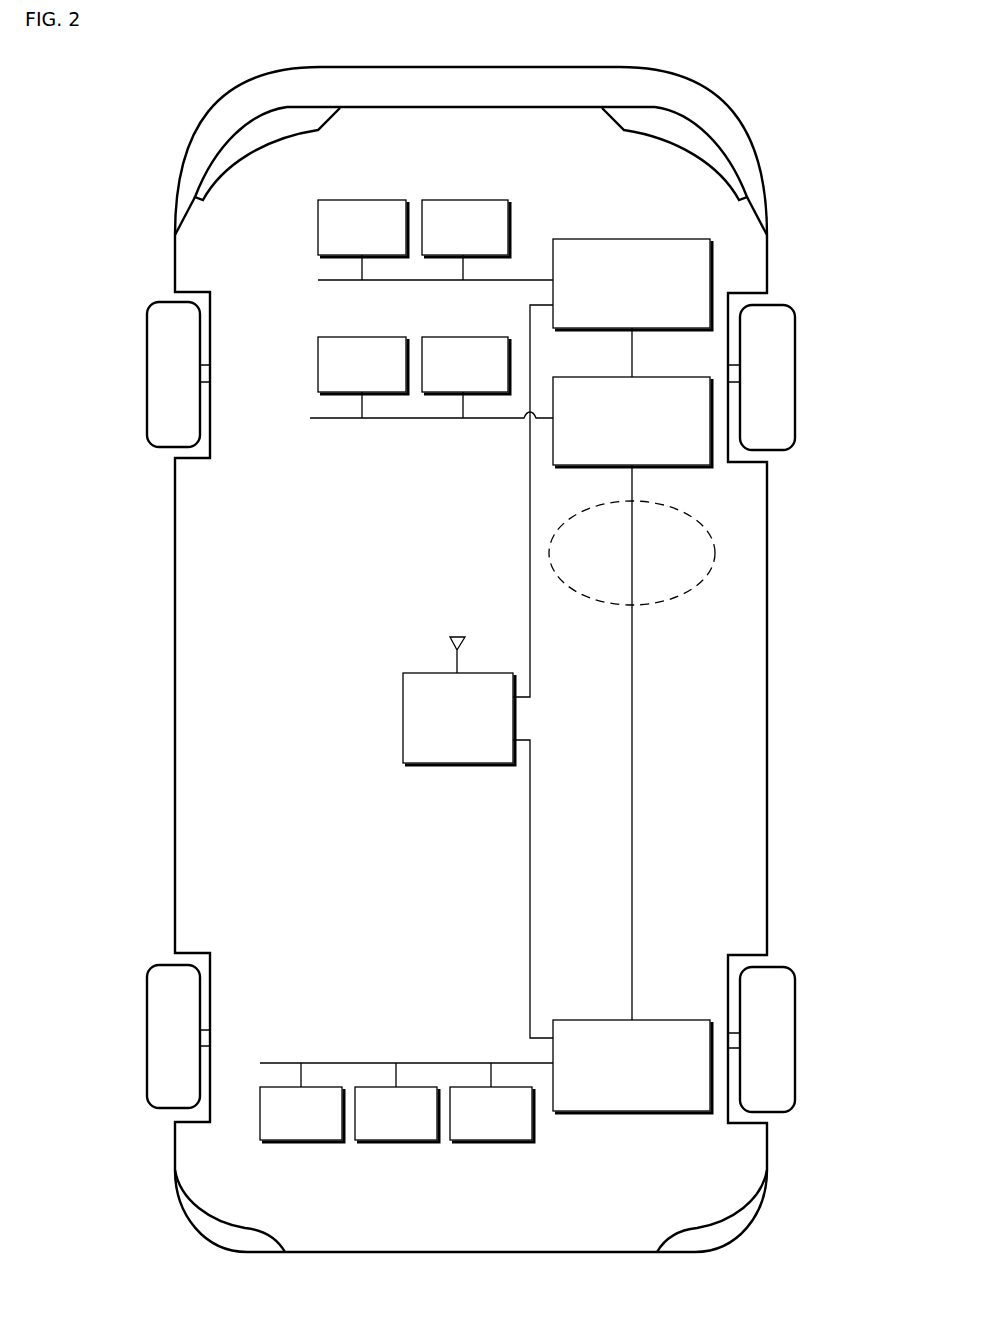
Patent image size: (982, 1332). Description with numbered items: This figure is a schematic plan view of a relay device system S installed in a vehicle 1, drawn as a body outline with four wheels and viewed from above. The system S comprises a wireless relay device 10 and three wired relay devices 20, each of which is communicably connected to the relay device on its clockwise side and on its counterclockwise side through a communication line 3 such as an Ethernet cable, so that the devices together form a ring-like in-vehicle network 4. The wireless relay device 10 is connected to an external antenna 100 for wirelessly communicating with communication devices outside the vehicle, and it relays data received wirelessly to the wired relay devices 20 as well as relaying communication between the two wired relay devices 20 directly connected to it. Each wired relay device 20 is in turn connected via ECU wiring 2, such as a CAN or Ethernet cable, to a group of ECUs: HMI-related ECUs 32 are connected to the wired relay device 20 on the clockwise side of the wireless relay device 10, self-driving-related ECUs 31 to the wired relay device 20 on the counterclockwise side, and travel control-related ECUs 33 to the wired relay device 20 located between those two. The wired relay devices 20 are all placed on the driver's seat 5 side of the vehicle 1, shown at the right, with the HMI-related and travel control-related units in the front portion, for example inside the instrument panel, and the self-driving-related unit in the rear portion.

The vehicle 1 is at (767, 258).
The relay device system S is at (822, 104).
The ECU wiring 2 is at (478, 280).
The communication line 3 is at (632, 365).
The in-vehicle network 4 is at (310, 748).
The driver's seat 5 is at (715, 553).
The wireless relay device 10 is at (473, 765).
The wired relay device 20 is at (618, 238).
The self-driving-related ECUs 31 is at (292, 1023).
The HMI-related ECUs 32 is at (385, 184).
The travel control-related ECUs 33 is at (333, 325).
The external antenna 100 is at (455, 632).